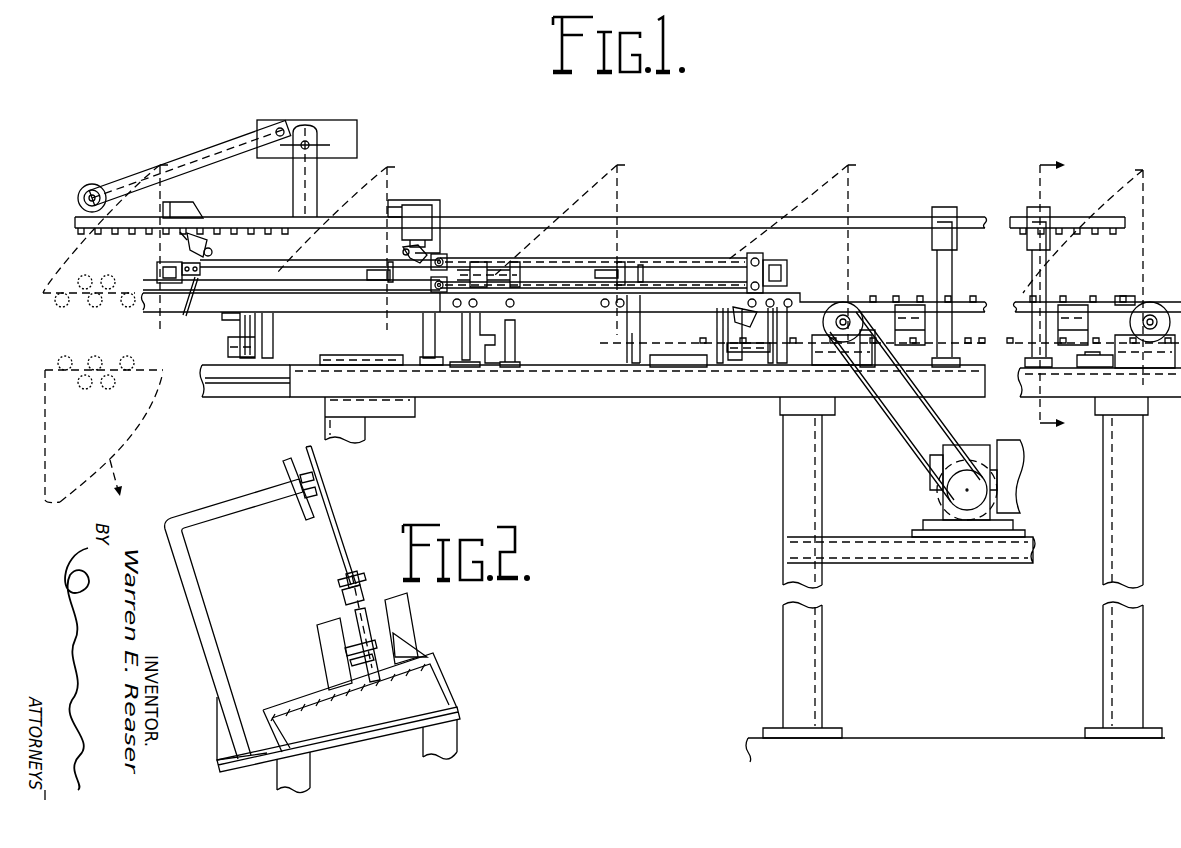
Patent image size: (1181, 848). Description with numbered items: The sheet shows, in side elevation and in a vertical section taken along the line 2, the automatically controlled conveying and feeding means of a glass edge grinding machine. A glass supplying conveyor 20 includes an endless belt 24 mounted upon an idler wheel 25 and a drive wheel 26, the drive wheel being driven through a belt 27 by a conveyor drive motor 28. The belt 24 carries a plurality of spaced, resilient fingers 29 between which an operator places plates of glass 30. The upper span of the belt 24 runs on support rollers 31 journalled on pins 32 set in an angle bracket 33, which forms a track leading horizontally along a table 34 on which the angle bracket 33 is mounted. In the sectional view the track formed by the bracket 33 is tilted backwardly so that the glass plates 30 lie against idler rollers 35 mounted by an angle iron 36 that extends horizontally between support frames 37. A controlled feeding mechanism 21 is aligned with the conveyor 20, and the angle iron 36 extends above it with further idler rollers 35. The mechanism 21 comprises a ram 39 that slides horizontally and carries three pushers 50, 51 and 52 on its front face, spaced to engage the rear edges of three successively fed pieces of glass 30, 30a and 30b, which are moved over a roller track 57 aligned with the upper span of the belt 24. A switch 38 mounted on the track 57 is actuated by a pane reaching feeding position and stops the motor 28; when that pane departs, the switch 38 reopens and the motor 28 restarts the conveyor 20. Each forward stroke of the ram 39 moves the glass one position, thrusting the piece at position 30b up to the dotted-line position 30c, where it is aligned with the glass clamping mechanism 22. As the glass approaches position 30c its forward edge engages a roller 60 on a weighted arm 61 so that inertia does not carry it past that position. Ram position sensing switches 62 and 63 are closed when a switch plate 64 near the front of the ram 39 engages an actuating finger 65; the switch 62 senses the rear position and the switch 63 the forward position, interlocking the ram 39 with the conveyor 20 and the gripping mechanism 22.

In FIG. 1, the section line 2- 2 is at (1059, 298).
In FIG. 1, the glass supplying conveyor 20 is at (991, 265).
In FIG. 1, the controlled feeding mechanism 21 is at (544, 182).
In FIG. 1, the glass clamping mechanism 22 is at (82, 360).
In FIG. 1, the endless belt 24 is at (985, 348).
In FIG. 2, the endless belt 24 is at (363, 587).
In FIG. 1, the idler wheel 25 is at (1150, 300).
In FIG. 1, the drive wheel 26 is at (823, 320).
In FIG. 1, the belt 27 is at (906, 458).
In FIG. 1, the conveyor drive motor 28 is at (973, 445).
In FIG. 1, the resilient fingers 29 is at (1122, 295).
In FIG. 2, the resilient fingers 29 is at (352, 573).
In FIG. 1, the plates of glass 30 is at (855, 190).
In FIG. 2, the plates of glass 30 is at (330, 518).
In FIG. 1, the piece of glass (second position) 30a is at (620, 187).
In FIG. 1, the piece of glass (third position) 30b is at (390, 187).
In FIG. 1, the glass in gripping position 30c is at (173, 191).
In FIG. 2, the support rollers 31 is at (337, 613).
In FIG. 2, the pins 32 is at (398, 605).
In FIG. 1, the angle bracket 33 is at (966, 312).
In FIG. 2, the angle bracket 33 is at (413, 647).
In FIG. 1, the table 34 is at (840, 400).
In FIG. 2, the idler rollers 35 is at (315, 513).
In FIG. 1, the angle iron 36 is at (728, 220).
In FIG. 2, the angle iron 36 is at (302, 473).
In FIG. 1, the support frames 37 is at (953, 266).
In FIG. 2, the support frames 37 is at (220, 520).
In FIG. 1, the switch 38 is at (720, 322).
In FIG. 1, the ram 39 is at (690, 272).
In FIG. 1, the pusher 50 is at (598, 268).
In FIG. 1, the pusher 51 is at (373, 262).
In FIG. 1, the front pusher 52 is at (157, 266).
In FIG. 1, the roller track 57 is at (520, 300).
In FIG. 1, the roller 60 is at (92, 185).
In FIG. 1, the weighted arm 61 is at (211, 152).
In FIG. 1, the ram position sensing switch 62 is at (440, 240).
In FIG. 1, the ram position sensing switch 63 is at (200, 243).
In FIG. 1, the switch plate 64 is at (183, 310).
In FIG. 1, the actuating finger 65 is at (212, 252).